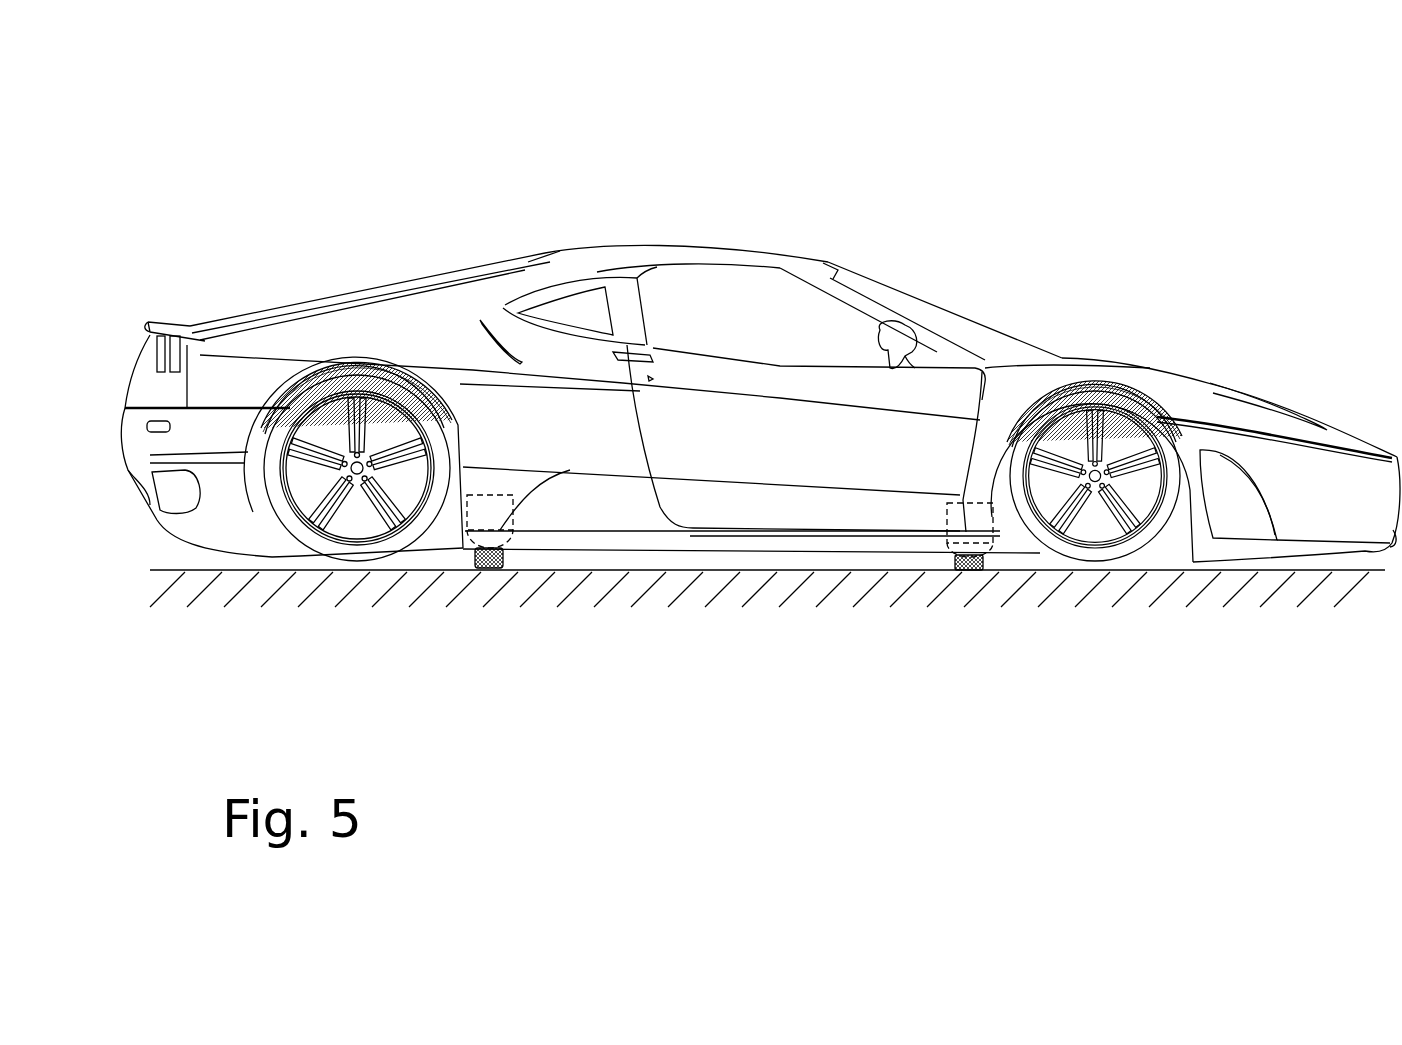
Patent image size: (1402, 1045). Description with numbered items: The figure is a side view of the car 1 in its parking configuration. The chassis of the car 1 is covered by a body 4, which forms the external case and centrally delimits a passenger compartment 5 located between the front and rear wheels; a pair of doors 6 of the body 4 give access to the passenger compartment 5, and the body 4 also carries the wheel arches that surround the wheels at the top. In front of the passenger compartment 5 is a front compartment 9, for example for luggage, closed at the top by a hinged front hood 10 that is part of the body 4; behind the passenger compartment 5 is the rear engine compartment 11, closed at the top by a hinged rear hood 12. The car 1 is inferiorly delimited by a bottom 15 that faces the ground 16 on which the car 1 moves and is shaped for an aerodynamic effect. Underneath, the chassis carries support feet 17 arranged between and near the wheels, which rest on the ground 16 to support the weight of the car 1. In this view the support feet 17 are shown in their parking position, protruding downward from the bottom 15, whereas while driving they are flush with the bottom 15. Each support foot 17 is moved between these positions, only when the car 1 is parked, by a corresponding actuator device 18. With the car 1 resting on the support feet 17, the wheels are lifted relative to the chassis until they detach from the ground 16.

The car 1 is at (1217, 103).
The body 4 is at (505, 105).
The passenger compartment 5 is at (698, 187).
The doors 6 is at (800, 455).
The front compartment 9 is at (1220, 334).
The front hood 10 is at (1147, 366).
The rear engine compartment 11 is at (373, 249).
The rear hood 12 is at (293, 305).
The bottom 15 is at (622, 551).
The ground 16 is at (1355, 570).
The support feet 17 is at (492, 570).
The actuator devices 18 is at (972, 572).